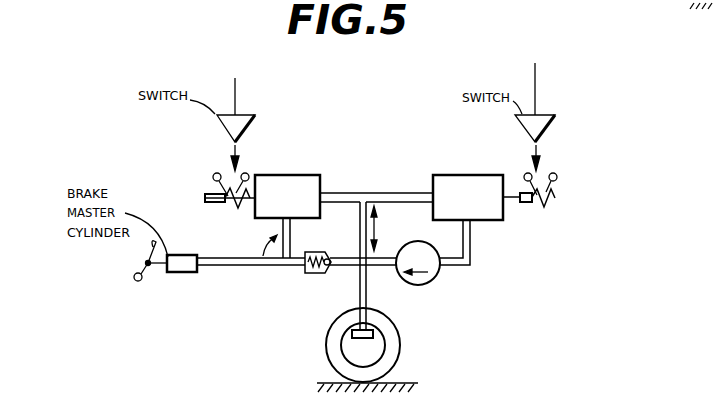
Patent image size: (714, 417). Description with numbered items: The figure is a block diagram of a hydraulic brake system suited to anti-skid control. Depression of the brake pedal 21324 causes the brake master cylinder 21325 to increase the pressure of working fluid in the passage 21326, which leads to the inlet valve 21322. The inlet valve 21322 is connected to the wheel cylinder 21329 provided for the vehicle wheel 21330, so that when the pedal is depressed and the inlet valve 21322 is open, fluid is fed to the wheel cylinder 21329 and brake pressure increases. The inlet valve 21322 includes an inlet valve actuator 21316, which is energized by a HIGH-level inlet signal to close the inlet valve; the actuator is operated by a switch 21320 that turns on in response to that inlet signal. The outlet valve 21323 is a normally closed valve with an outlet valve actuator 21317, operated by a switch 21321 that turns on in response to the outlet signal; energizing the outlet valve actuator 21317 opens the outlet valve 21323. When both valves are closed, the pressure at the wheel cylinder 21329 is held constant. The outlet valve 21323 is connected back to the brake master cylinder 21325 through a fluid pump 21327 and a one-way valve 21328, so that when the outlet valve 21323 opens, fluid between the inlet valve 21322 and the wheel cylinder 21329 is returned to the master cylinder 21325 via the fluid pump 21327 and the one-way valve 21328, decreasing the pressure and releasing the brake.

The inlet valve actuator 21316 is at (213, 176).
The outlet valve actuator 21317 is at (553, 200).
The switch 21320 is at (252, 122).
The switch 21321 is at (555, 118).
The inlet valve 21322 is at (335, 160).
The outlet valve 21323 is at (467, 175).
The brake pedal 21324 is at (145, 284).
The brake master cylinder 21325 is at (192, 272).
The passage 21326 is at (222, 258).
The fluid pump 21327 is at (437, 276).
The one-way valve 21328 is at (315, 274).
The wheel cylinder 21329 is at (368, 320).
The vehicle wheel 21330 is at (390, 352).